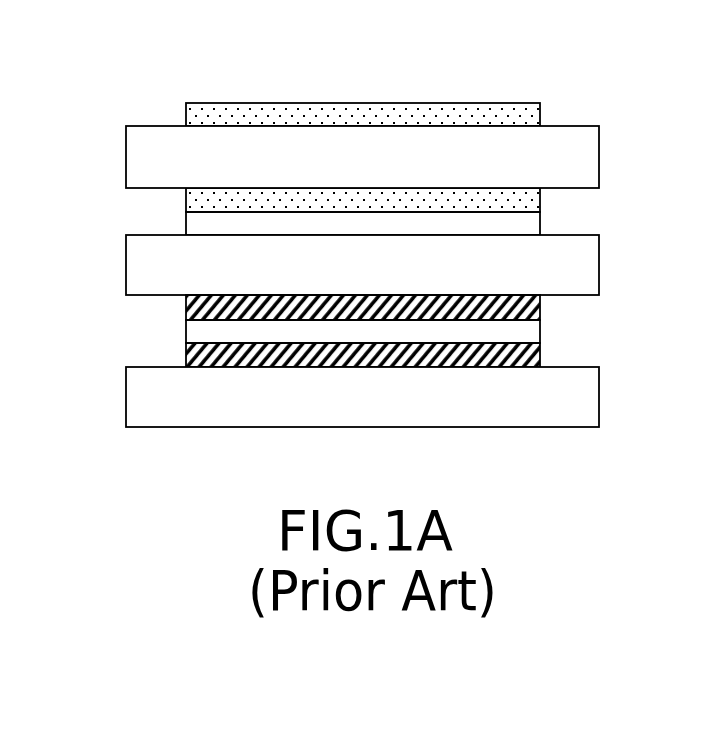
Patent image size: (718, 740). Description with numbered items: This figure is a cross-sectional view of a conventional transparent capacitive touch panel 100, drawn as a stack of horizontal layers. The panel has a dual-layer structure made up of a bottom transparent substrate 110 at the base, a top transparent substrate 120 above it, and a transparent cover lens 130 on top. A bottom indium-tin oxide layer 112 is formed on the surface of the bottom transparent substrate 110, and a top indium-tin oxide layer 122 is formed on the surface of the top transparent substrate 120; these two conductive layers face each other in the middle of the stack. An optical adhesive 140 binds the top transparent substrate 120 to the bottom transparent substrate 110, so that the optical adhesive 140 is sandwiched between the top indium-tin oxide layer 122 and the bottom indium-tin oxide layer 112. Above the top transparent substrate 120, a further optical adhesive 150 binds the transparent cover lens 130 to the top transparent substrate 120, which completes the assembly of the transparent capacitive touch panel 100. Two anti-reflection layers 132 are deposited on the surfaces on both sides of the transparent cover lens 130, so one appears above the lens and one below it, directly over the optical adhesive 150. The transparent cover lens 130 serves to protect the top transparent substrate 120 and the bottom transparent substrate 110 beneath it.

The transparent capacitive touch panel 100 is at (385, 309).
The bottom transparent substrate 110 is at (575, 401).
The bottom indium-tin oxide layer 112 is at (538, 348).
The top transparent substrate 120 is at (575, 264).
The top indium-tin oxide layer 122 is at (538, 309).
The transparent cover lens 130 is at (575, 158).
The anti-reflection layers 132 is at (528, 119).
The optical adhesive 140 is at (207, 331).
The optical adhesive 150 is at (206, 221).